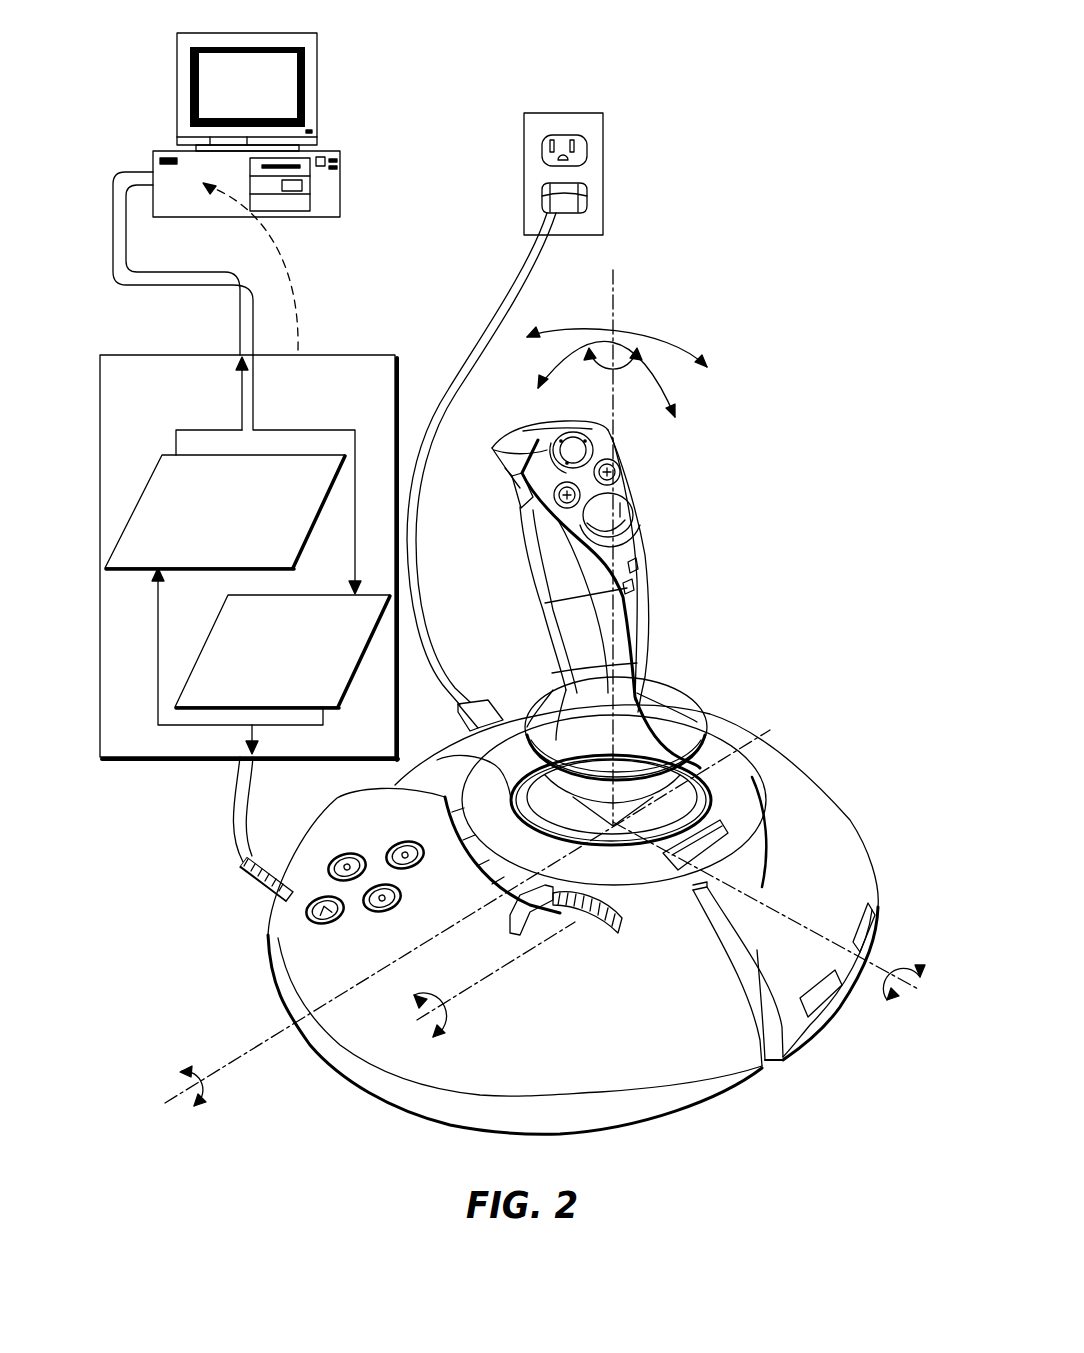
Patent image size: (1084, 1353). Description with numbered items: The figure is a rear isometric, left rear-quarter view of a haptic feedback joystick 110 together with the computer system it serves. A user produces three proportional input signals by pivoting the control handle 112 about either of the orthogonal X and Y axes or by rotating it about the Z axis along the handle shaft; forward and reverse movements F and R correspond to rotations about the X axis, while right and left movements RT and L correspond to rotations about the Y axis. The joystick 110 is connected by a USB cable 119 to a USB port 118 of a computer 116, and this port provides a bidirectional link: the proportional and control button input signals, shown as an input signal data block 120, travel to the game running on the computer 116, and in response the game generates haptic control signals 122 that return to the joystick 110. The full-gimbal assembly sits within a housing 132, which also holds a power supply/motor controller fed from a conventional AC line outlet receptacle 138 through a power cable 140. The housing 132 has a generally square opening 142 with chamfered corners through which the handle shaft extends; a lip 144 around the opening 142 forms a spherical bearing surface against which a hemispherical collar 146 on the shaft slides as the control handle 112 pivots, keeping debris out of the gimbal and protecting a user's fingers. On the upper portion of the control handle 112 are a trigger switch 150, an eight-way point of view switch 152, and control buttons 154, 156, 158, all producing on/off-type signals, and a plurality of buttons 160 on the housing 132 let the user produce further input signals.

The joystick 110 is at (518, 728).
The control handle 112 is at (583, 594).
The computer 116 is at (335, 185).
The Universal Serial Bus (USB) port 118 is at (257, 529).
The USB cable 119 is at (243, 822).
The input signal data block 120 is at (265, 460).
The haptic control signals 122 is at (323, 687).
The housing 132 is at (310, 975).
The AC line outlet receptacle 138 is at (540, 200).
The power cable 140 is at (438, 653).
The opening 142 is at (703, 768).
The lip 144 is at (612, 797).
The hemispherical collar 146 is at (703, 727).
The trigger switch 150 is at (507, 493).
The 8-way point of view (POV) switch 152 is at (583, 448).
The control button 154 is at (558, 490).
The control button 156 is at (613, 474).
The control button 158 is at (612, 515).
The buttons 160 is at (304, 908).